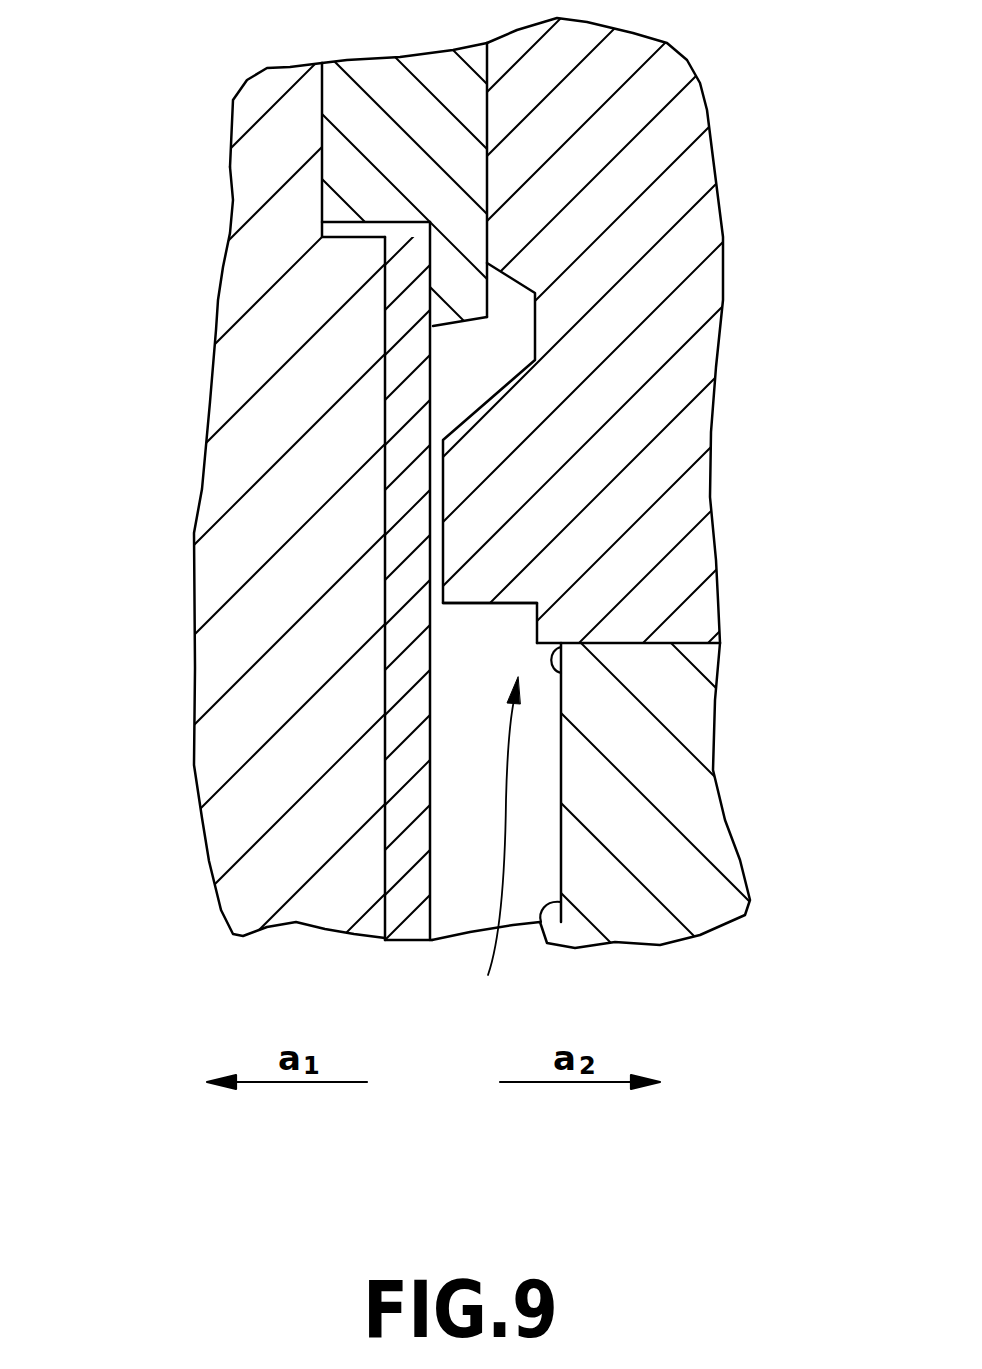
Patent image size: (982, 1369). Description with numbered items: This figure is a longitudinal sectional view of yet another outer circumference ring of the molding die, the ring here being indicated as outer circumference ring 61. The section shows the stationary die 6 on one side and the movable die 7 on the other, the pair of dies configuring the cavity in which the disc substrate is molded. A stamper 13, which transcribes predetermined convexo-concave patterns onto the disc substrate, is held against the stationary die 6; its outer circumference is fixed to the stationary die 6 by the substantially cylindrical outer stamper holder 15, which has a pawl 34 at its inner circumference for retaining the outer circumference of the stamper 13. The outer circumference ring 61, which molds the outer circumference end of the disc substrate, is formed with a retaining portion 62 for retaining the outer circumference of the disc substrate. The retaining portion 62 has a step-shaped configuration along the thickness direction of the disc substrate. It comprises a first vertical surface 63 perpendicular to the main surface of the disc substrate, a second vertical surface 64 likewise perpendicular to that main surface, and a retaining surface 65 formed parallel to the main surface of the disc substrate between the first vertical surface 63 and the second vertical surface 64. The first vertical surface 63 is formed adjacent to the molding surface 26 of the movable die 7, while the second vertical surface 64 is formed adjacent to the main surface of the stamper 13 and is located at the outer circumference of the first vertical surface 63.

The stationary die 6 is at (225, 730).
The movable die 7 is at (707, 795).
The stamper 13 is at (410, 923).
The outer stamper holder 15 is at (393, 128).
The molding surface 26 is at (575, 948).
The pawl 34 is at (483, 317).
The outer circumference ring 61 is at (697, 362).
The retaining portion 62 is at (488, 851).
The first vertical surface 63 is at (562, 665).
The second vertical surface 64 is at (475, 607).
The retaining surface 65 is at (535, 630).